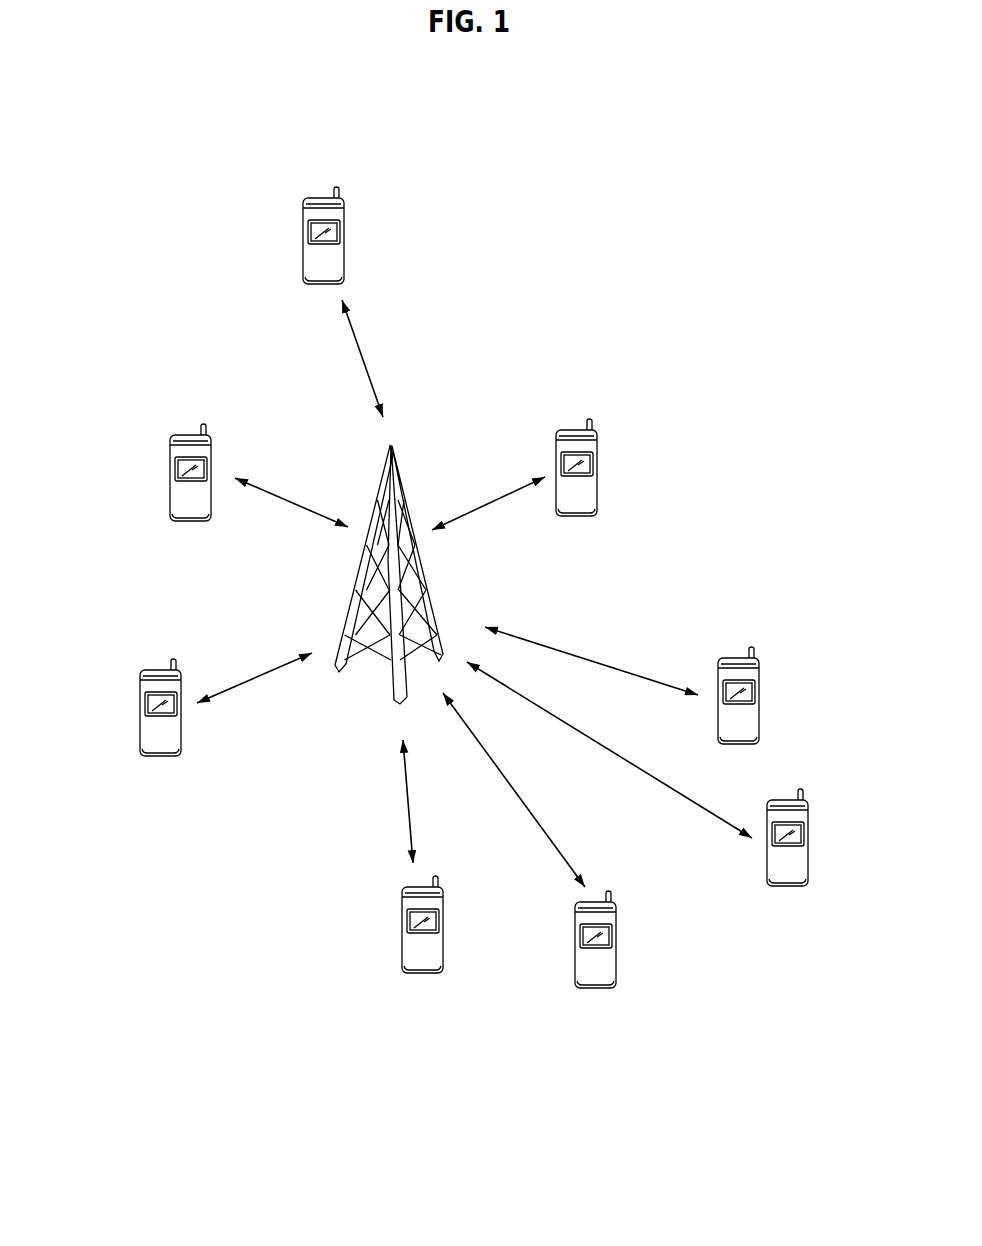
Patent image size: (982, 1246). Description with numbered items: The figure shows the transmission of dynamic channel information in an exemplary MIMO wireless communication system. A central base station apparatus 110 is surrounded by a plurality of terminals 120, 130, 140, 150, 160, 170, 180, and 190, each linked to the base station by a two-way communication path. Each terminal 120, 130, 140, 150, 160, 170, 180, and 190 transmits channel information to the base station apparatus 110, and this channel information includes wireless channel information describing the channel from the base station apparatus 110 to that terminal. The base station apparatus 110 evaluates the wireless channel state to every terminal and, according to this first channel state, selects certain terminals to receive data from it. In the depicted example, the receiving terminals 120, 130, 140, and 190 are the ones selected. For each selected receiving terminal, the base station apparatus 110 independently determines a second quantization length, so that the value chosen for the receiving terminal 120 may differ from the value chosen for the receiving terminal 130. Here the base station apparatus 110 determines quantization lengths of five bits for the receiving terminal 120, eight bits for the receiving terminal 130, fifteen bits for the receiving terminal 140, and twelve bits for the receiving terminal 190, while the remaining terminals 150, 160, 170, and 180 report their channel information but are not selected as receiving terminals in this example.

The base station apparatus 110 is at (398, 467).
The receiving terminal 120 is at (323, 198).
The receiving terminal 130 is at (188, 435).
The receiving terminal 140 is at (575, 430).
The terminal 150 is at (735, 658).
The terminal 160 is at (598, 988).
The terminal 170 is at (790, 886).
The terminal 180 is at (158, 670).
The receiving terminal 190 is at (402, 922).